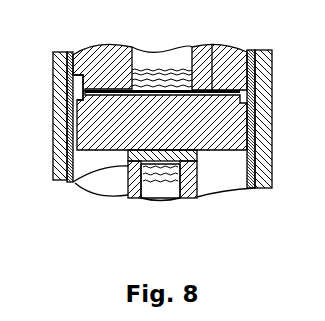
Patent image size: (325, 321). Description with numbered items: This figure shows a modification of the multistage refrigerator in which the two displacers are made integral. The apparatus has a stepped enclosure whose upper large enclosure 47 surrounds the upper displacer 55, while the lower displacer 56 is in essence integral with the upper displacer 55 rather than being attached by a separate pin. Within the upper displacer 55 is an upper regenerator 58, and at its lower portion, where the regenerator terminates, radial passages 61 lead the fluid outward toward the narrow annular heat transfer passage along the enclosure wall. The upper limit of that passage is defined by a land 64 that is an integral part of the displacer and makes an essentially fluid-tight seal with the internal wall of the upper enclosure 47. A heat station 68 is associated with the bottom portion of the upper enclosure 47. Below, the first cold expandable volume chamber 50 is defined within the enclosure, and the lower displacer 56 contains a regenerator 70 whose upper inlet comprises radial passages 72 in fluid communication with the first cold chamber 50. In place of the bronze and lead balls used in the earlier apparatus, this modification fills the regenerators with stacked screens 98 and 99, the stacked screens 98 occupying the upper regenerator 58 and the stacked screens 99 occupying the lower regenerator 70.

The upper large enclosure 47 is at (67, 78).
The first cold expandable volume chamber 50 is at (230, 165).
The upper displacer 55 is at (98, 60).
The lower displacer 56 is at (188, 195).
The upper regenerator 58 is at (148, 60).
The radial passages 61 is at (213, 91).
The land 64 is at (72, 52).
The heat station 68 is at (58, 106).
The regenerator 70 is at (168, 190).
The radial passages 72 is at (73, 181).
The stacked screens 98 is at (160, 72).
The stacked screens 99 is at (143, 176).